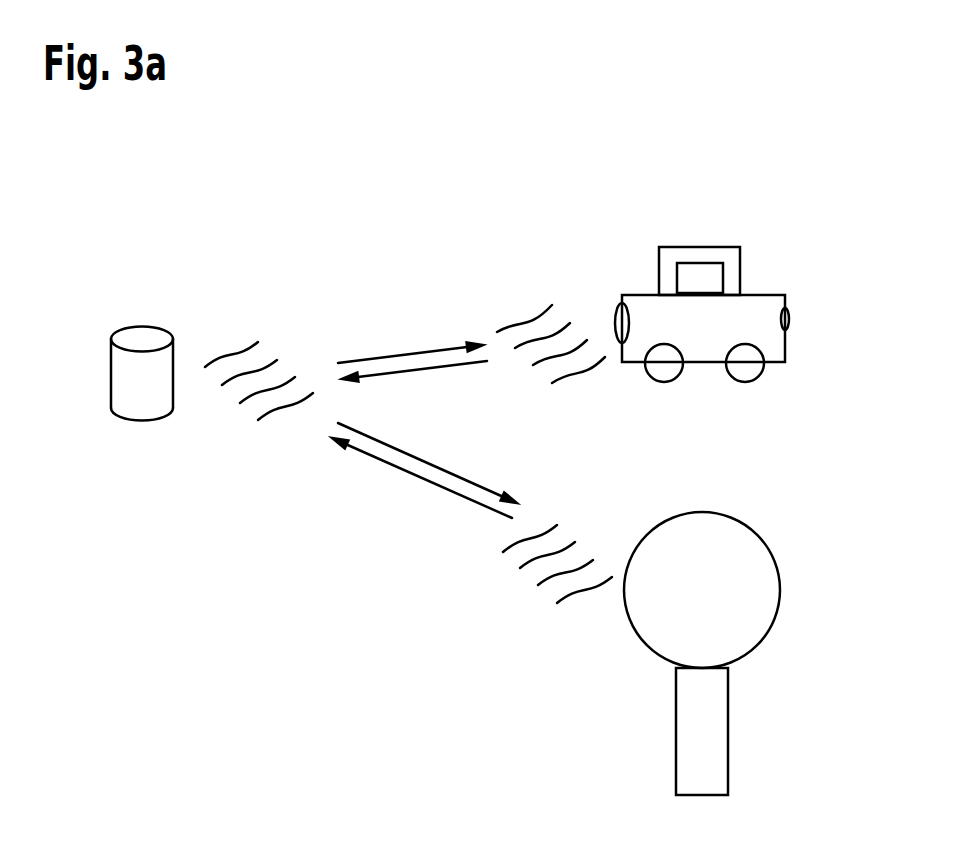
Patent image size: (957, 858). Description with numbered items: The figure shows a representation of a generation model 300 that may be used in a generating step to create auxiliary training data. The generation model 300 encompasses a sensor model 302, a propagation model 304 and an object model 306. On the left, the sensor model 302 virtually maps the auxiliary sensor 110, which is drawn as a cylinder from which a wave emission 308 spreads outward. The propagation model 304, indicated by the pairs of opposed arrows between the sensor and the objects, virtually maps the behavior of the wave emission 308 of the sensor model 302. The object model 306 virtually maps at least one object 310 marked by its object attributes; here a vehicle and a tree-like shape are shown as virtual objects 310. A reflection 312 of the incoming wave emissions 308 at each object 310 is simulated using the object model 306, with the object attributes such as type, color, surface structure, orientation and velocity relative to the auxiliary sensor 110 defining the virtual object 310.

The auxiliary sensor 110 is at (112, 372).
The generation model 300 is at (762, 179).
The sensor model 302 is at (134, 294).
The propagation model 304 is at (398, 324).
The object model 306 is at (627, 225).
The wave emission 308 is at (230, 353).
The object 310 is at (700, 247).
The reflection 312 is at (523, 320).